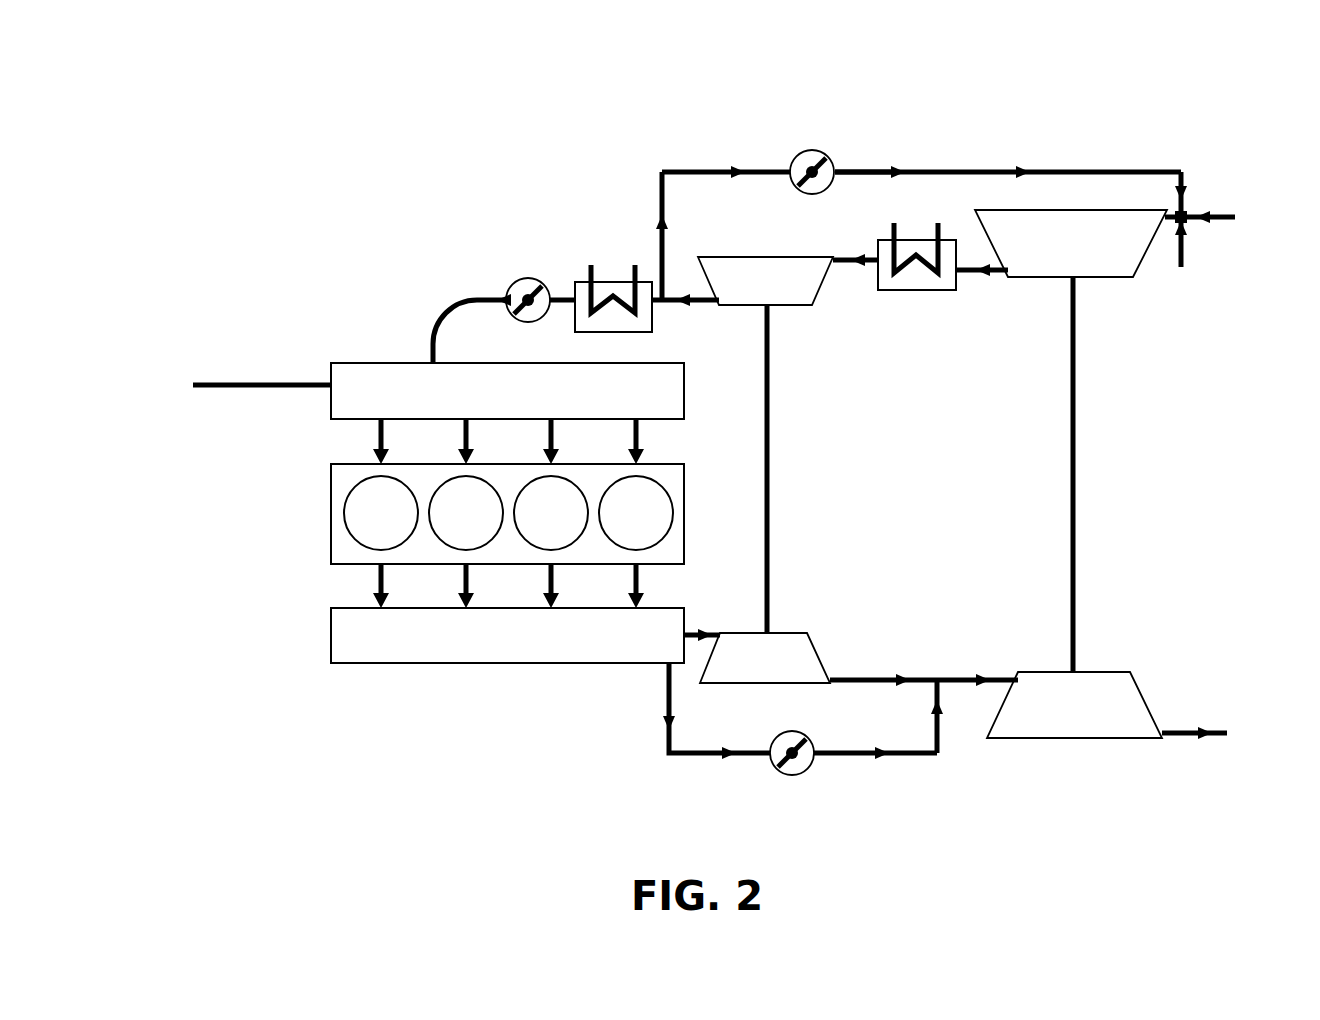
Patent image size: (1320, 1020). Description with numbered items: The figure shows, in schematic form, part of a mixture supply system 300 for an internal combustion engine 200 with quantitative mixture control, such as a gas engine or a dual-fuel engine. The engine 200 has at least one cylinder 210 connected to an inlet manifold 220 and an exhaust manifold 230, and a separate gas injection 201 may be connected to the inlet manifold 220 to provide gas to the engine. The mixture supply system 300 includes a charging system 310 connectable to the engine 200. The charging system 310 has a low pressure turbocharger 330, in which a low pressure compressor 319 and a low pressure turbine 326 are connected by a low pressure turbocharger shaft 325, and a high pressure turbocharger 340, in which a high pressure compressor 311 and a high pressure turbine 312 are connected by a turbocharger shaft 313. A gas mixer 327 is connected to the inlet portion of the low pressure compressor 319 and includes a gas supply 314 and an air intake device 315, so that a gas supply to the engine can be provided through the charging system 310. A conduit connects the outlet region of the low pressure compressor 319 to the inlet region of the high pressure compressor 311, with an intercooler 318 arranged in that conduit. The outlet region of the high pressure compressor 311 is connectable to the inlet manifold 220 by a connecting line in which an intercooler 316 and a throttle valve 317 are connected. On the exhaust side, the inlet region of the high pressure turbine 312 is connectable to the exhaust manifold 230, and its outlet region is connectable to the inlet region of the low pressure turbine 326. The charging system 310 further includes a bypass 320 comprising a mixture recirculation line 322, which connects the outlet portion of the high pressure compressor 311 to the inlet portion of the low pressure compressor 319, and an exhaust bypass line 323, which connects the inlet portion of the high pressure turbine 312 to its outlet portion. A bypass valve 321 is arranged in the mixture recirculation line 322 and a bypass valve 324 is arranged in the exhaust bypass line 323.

The internal combustion engine 200 is at (428, 392).
The gas injection 201 is at (233, 374).
The cylinder 210 is at (607, 480).
The inlet manifold 220 is at (375, 355).
The exhaust manifold 230 is at (329, 633).
The mixture supply system 300 is at (866, 437).
The charging system 310 is at (1137, 474).
The high pressure compressor 311 is at (830, 288).
The high pressure turbine 312 is at (787, 619).
The turbocharger shaft 313 is at (772, 497).
The gas supply 314 is at (1182, 279).
The air intake device 315 is at (1208, 207).
The intercooler 316 is at (619, 267).
The throttle valve 317 is at (512, 274).
The intercooler 318 is at (948, 303).
The low pressure compressor 319 is at (1114, 288).
The bypass 320 is at (964, 161).
The bypass valve 321 is at (814, 144).
The mixture recirculation line 322 is at (864, 159).
The exhaust bypass line 323 is at (899, 763).
The bypass valve 324 is at (809, 783).
The low pressure turbocharger shaft 325 is at (1081, 487).
The low pressure turbine 326 is at (1079, 669).
The gas mixer 327 is at (1194, 228).
The low pressure turbocharger 330 is at (1103, 474).
The high pressure turbocharger 340 is at (813, 470).